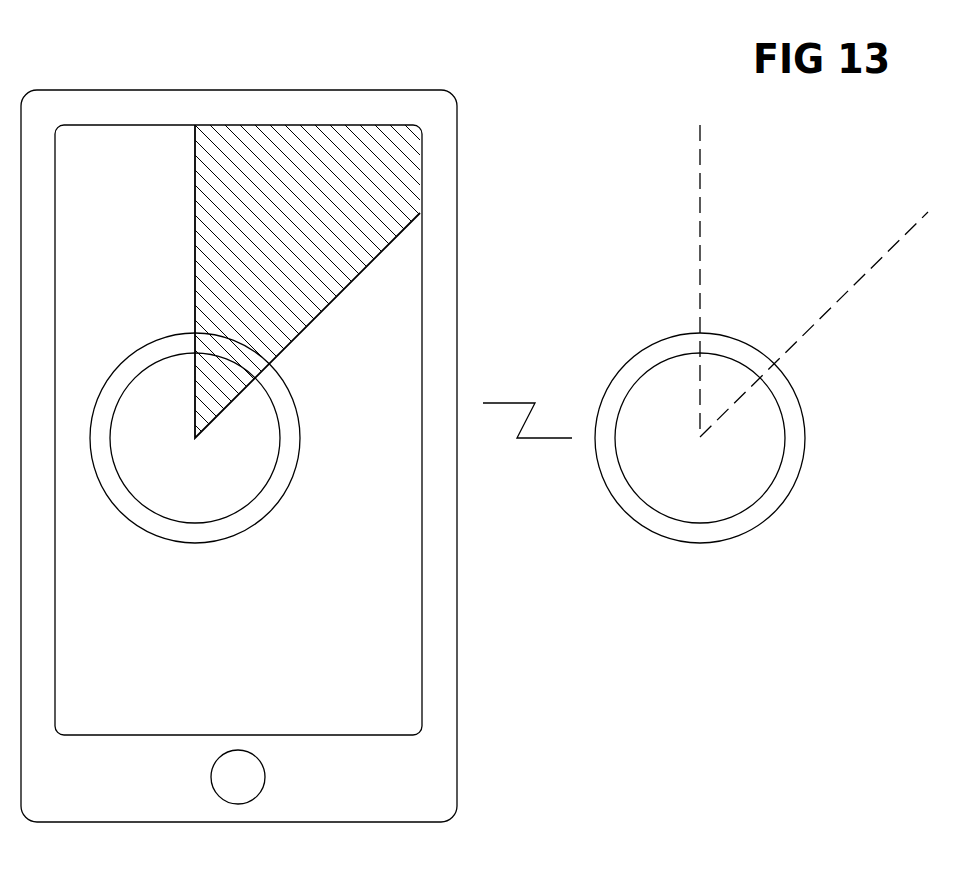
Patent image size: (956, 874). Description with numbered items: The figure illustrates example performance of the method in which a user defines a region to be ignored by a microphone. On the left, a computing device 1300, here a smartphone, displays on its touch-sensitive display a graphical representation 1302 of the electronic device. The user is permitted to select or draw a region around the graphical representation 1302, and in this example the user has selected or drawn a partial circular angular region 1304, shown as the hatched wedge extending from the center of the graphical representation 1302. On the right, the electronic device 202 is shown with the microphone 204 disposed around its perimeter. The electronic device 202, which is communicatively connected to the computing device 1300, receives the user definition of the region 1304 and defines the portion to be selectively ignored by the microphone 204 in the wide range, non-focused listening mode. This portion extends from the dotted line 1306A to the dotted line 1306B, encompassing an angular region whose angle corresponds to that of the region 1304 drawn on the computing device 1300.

The computing device 1300 is at (192, 90).
The graphical representation 1302 is at (169, 497).
The partial circular angular region 1304 is at (212, 176).
The electronic device 202 is at (680, 496).
The microphone 204 is at (687, 528).
The dotted line 1306A is at (698, 170).
The dotted line 1306B is at (860, 277).